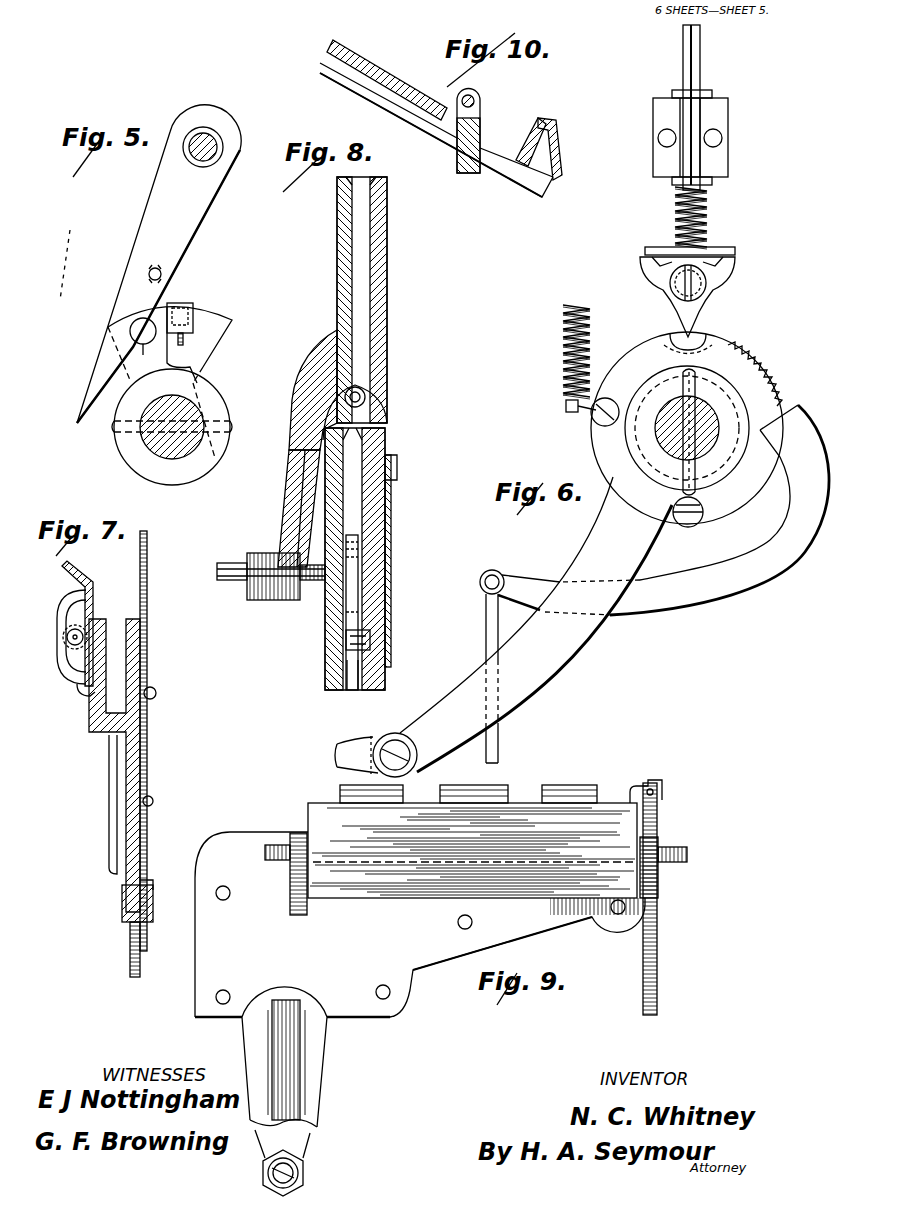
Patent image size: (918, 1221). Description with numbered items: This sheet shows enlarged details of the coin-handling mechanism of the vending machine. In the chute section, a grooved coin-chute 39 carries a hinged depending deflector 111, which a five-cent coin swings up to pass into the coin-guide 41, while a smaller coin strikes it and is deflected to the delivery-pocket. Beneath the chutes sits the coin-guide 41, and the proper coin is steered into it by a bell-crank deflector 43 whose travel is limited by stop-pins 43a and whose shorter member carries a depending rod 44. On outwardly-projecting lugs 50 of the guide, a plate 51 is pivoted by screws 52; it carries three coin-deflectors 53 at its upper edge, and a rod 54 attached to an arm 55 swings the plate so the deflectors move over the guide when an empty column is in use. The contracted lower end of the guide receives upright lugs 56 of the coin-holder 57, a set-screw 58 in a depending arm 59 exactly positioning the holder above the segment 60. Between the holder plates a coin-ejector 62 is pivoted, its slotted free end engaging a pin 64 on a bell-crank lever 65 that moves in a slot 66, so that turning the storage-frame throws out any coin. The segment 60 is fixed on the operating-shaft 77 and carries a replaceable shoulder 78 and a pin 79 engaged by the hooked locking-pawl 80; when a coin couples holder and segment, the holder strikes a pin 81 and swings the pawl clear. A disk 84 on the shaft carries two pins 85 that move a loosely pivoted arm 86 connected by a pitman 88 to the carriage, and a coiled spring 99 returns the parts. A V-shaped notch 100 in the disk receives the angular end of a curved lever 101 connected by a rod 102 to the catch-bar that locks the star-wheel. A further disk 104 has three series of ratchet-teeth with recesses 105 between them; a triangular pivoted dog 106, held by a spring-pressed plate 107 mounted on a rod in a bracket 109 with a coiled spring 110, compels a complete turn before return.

In FIG. 10, the coin-chute 39 is at (441, 118).
In FIG. 7, the coin-guide 41 is at (116, 660).
In FIG. 8, the coin-guide 41 is at (338, 313).
In FIG. 9, the coin-guide 41 is at (420, 924).
In FIG. 7, the deflector 43 is at (148, 604).
In FIG. 7, the stop-pins 43a is at (157, 692).
In FIG. 7, the depending rod 44 is at (130, 949).
In FIG. 7, the lugs 50 is at (78, 692).
In FIG. 9, the lugs 50 is at (672, 887).
In FIG. 7, the plate 51 is at (65, 664).
In FIG. 9, the plate 51 is at (472, 850).
In FIG. 7, the screws 52 is at (68, 632).
In FIG. 9, the screws 52 is at (275, 843).
In FIG. 7, the coin-deflectors 53 is at (90, 581).
In FIG. 9, the coin-deflectors 53 is at (472, 782).
In FIG. 9, the rod 54 is at (667, 899).
In FIG. 9, the arm 55 is at (662, 800).
In FIG. 8, the upright lugs 56 is at (360, 373).
In FIG. 8, the coin-holder 57 is at (383, 523).
In FIG. 8, the set-screw 58 is at (271, 568).
In FIG. 9, the set-screw 58 is at (298, 1173).
In FIG. 8, the depending arm 59 is at (290, 487).
In FIG. 9, the depending arm 59 is at (320, 1088).
In FIG. 5, the segment 60 is at (175, 382).
In FIG. 8, the coin-ejector 62 is at (348, 686).
In FIG. 8, the pin 64 is at (360, 621).
In FIG. 8, the bell-crank lever 65 is at (391, 580).
In FIG. 8, the slot 66 is at (372, 640).
In FIG. 5, the operating-shaft 77 is at (168, 453).
In FIG. 6, the operating-shaft 77 is at (706, 422).
In FIG. 5, the shoulder 78 is at (169, 304).
In FIG. 5, the pin 79 is at (146, 345).
In FIG. 5, the locking-pawl 80 is at (108, 305).
In FIG. 5, the pin 81 is at (157, 268).
In FIG. 6, the disk 84 is at (652, 340).
In FIG. 6, the screws or pins 85 is at (594, 420).
In FIG. 6, the arm 86 is at (536, 624).
In FIG. 6, the pitman 88 is at (337, 754).
In FIG. 6, the coiled spring 99 is at (563, 338).
In FIG. 6, the V-shaped notch 100 is at (783, 408).
In FIG. 6, the curved lever 101 is at (634, 577).
In FIG. 6, the rod 102 is at (500, 748).
In FIG. 6, the disk 104 is at (752, 358).
In FIG. 6, the recesses 105 is at (700, 338).
In FIG. 6, the triangular pivoted dog 106 is at (707, 296).
In FIG. 6, the spring-pressed plate 107 is at (715, 249).
In FIG. 6, the bracket 109 is at (673, 137).
In FIG. 6, the coiled spring 110 is at (676, 215).
In FIG. 10, the depending deflector 111 is at (468, 142).